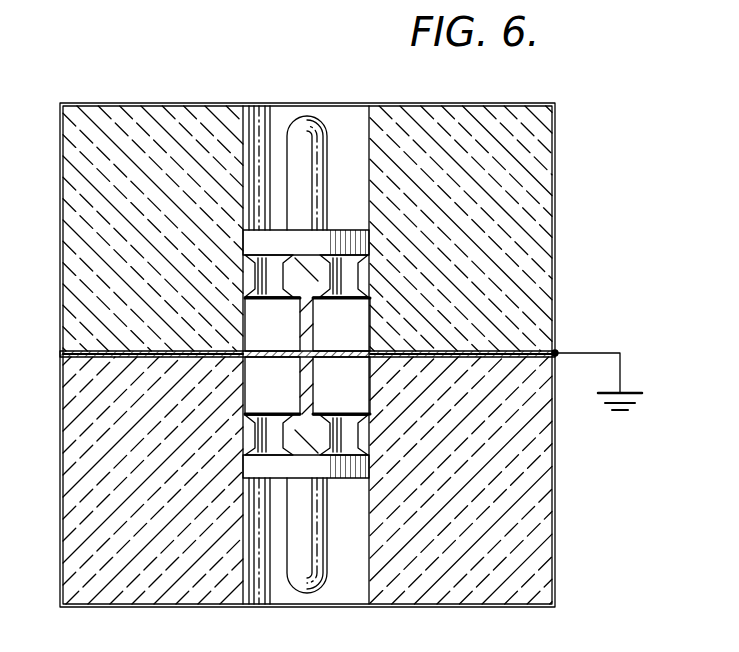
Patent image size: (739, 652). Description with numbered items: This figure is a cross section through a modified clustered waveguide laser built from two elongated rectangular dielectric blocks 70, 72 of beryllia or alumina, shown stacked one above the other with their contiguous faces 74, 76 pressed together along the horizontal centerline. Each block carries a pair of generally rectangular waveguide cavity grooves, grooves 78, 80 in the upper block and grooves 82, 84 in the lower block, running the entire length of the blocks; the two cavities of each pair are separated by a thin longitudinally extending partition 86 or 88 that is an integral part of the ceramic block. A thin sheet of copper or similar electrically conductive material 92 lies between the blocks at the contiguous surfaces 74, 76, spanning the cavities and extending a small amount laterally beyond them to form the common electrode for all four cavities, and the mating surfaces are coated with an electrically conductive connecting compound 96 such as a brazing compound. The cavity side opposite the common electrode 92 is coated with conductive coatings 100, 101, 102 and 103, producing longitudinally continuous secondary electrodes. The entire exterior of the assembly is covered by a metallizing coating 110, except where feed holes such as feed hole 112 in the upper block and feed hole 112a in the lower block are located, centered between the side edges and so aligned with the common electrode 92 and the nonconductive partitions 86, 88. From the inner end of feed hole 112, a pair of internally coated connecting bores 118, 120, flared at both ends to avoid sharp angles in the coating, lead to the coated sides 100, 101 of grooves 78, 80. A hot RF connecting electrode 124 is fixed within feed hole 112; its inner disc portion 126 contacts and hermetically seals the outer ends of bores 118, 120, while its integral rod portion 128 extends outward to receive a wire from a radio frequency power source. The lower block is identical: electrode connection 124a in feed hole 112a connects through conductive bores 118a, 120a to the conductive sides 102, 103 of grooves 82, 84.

The first dielectric block 70 is at (550, 192).
The second dielectric block 72 is at (548, 512).
The contiguous face 74 is at (462, 352).
The contiguous face 76 is at (442, 357).
The waveguide cavity groove 78 is at (244, 328).
The waveguide cavity groove 80 is at (371, 328).
The waveguide cavity groove 82 is at (244, 376).
The waveguide cavity groove 84 is at (371, 376).
The partition 86 is at (314, 331).
The partition 88 is at (314, 388).
The electrically conductive sheet 92 is at (287, 350).
The electrically conductive connecting compound 96 is at (156, 330).
The electrically conductive coating 100 is at (247, 301).
The electrically conductive coating 101 is at (367, 299).
The electrically conductive coating 102 is at (248, 413).
The electrically conductive coating 103 is at (367, 413).
The metallizing coating 110 is at (450, 103).
The feed hole 112 is at (258, 112).
The feed hole 112a is at (266, 600).
The connecting bore 118 is at (247, 273).
The connecting bore 118a is at (248, 437).
The connecting bore 120 is at (366, 272).
The connecting bore 120a is at (367, 437).
The hot RF connecting electrode 124 is at (333, 131).
The hot RF electrode connection 124a is at (332, 591).
The inner disc portion 126 is at (371, 240).
The rod portion 128 is at (320, 178).